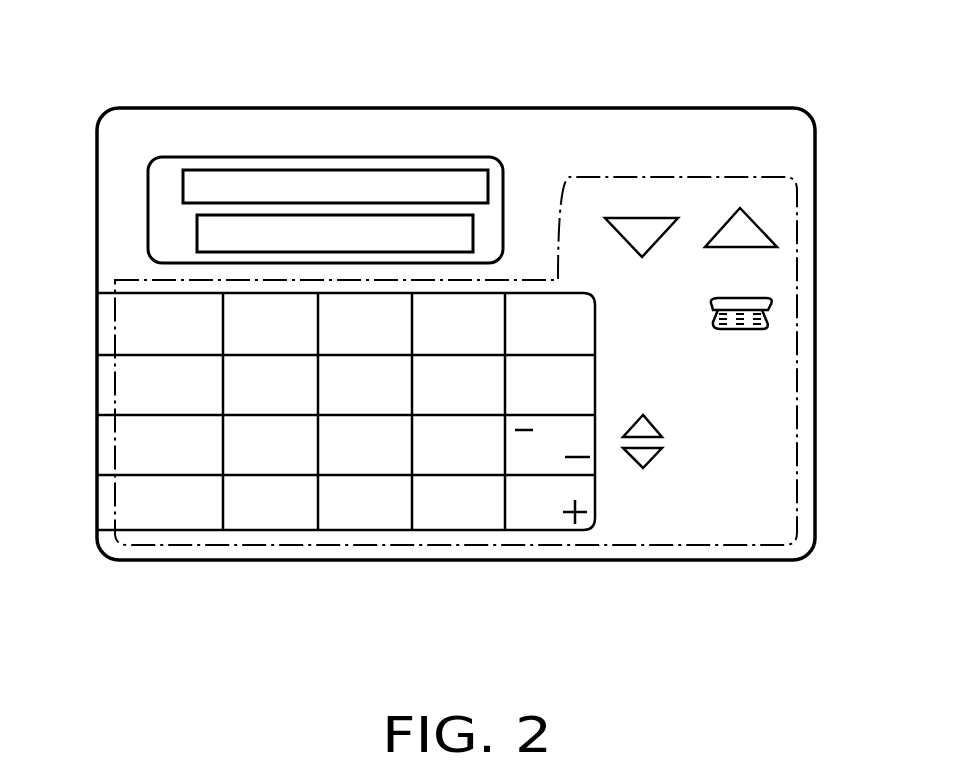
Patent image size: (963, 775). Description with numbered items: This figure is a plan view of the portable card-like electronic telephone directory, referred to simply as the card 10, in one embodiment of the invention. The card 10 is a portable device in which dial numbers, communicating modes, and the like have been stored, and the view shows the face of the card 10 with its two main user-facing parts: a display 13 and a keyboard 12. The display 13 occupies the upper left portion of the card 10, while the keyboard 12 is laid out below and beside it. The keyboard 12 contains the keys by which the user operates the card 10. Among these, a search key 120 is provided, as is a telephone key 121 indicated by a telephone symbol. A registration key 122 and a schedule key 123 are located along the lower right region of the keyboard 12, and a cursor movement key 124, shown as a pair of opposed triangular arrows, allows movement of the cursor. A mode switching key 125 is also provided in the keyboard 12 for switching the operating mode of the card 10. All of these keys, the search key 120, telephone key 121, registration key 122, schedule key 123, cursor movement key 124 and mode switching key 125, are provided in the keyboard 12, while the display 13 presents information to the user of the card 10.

The portable card-like electronic telephone directory 10 is at (362, 561).
The keyboard 12 is at (143, 278).
The display 13 is at (147, 212).
The search key 120 is at (702, 203).
The telephone key 121 is at (777, 303).
The registration key 122 is at (762, 523).
The schedule key 123 is at (648, 523).
The cursor movement key 124 is at (667, 432).
The mode switching key 125 is at (775, 450).